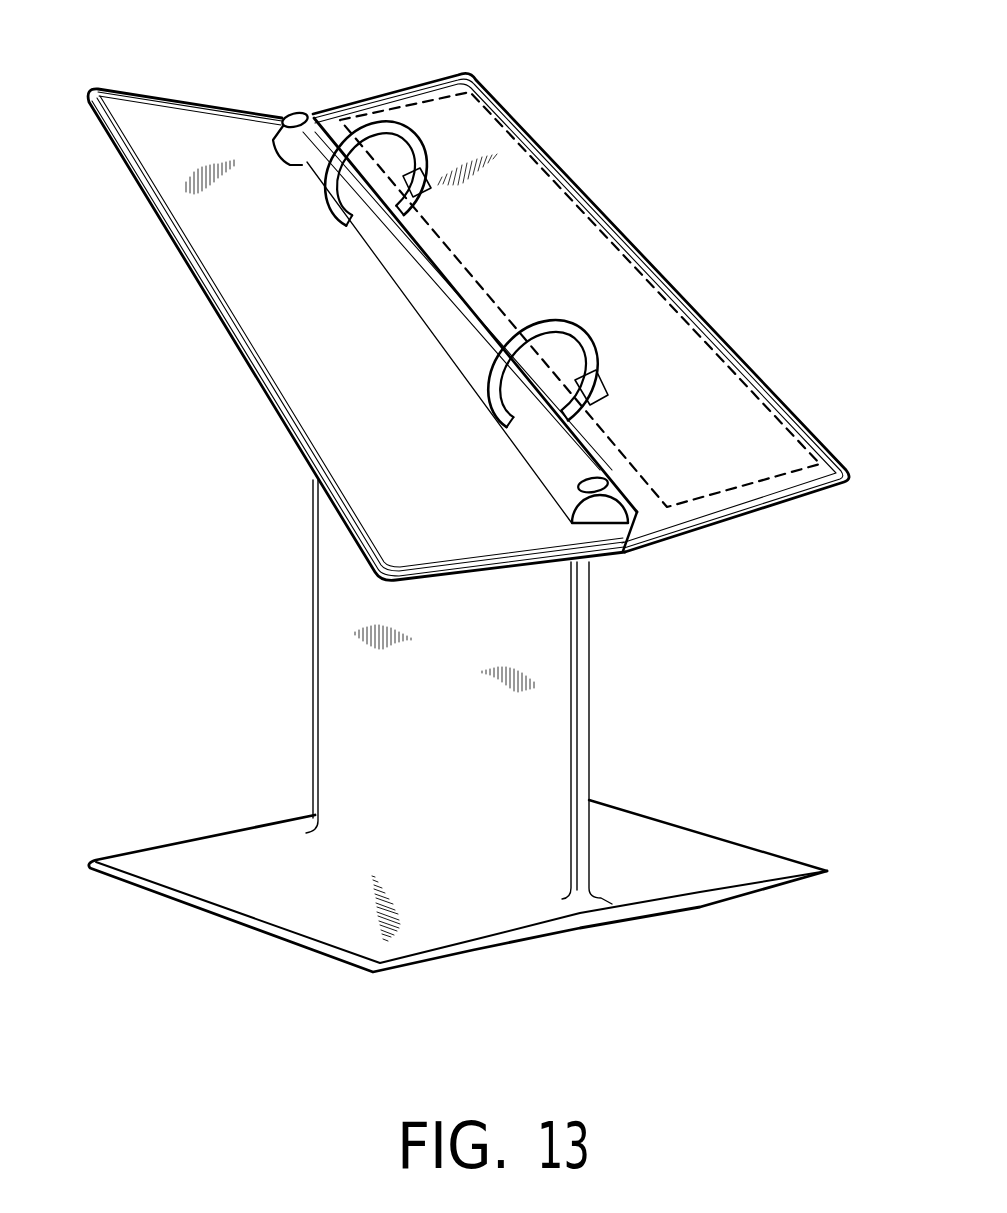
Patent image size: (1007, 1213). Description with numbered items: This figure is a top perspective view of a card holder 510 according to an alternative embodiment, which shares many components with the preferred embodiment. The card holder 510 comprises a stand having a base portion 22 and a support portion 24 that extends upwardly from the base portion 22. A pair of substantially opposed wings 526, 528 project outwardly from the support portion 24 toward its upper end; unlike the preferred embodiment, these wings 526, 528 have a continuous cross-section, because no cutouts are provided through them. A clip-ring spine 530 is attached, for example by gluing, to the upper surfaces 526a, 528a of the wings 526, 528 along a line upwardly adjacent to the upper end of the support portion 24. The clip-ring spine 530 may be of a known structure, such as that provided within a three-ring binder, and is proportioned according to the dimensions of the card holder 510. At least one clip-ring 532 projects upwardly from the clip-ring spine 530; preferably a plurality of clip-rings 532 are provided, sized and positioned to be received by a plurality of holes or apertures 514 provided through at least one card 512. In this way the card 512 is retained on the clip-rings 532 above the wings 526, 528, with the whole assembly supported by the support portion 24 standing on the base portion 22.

The base portion 22 is at (645, 838).
The support portion 24 is at (357, 611).
The card holder 510 is at (461, 314).
The card 512 is at (530, 163).
The holes or apertures 514 is at (608, 397).
The wing 526 is at (688, 308).
The upper surface of wing 526a is at (692, 444).
The wing 528 is at (226, 310).
The upper surface of wing 528a is at (400, 460).
The clip-ring spine 530 is at (298, 166).
The clip-ring 532 is at (555, 332).